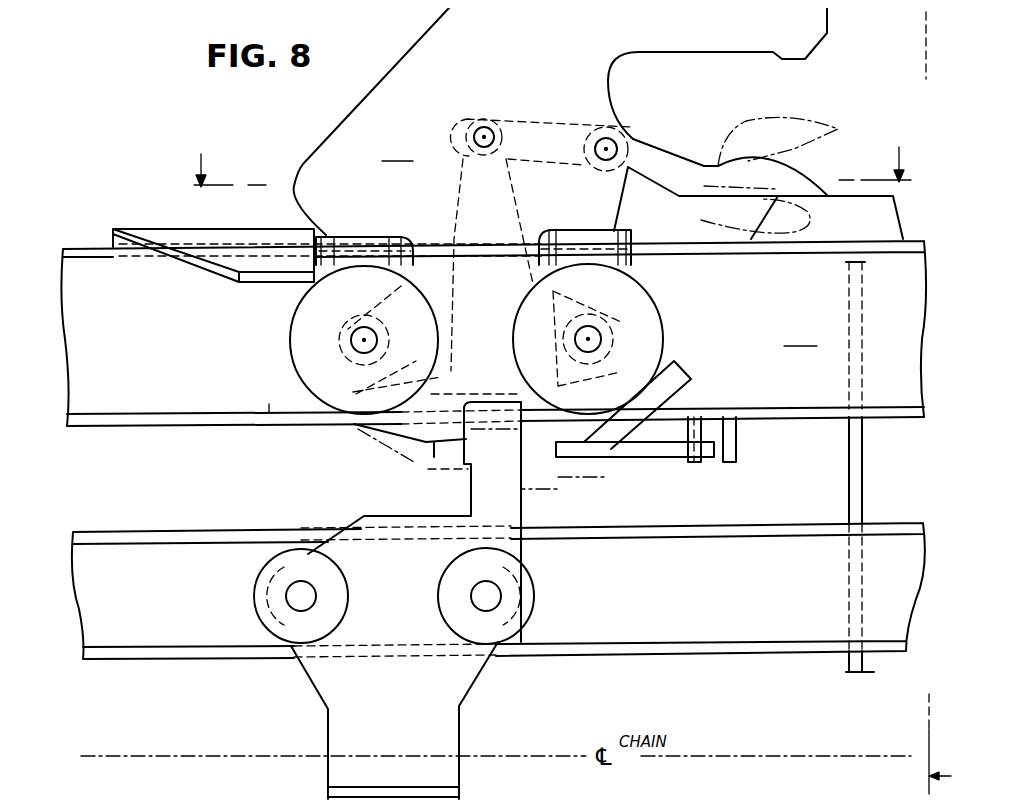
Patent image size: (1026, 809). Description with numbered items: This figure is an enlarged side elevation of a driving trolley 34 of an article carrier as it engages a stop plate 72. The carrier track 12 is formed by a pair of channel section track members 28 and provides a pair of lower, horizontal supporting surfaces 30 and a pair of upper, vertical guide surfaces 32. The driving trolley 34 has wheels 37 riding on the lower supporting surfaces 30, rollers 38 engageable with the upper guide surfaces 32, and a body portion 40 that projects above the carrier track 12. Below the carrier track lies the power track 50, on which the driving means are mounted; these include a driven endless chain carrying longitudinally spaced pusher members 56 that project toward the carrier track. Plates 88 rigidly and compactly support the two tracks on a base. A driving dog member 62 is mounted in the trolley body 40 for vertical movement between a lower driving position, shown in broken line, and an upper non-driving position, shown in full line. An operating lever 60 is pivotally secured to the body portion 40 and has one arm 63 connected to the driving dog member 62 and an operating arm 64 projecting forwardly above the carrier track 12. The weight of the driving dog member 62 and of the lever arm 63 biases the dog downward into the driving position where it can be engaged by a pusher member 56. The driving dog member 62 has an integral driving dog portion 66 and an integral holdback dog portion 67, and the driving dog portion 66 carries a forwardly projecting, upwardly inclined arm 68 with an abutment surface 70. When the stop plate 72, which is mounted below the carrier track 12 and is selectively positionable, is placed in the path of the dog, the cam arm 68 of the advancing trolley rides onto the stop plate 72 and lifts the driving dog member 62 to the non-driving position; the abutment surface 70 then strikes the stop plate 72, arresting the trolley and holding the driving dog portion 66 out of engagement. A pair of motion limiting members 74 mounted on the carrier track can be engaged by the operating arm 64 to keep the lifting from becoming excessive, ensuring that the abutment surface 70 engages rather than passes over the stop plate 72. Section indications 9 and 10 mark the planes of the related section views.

The section line 9- 9 is at (556, 167).
The section line 10- 10 is at (942, 408).
The carrier track 12 is at (88, 240).
The channel section track members 28 is at (800, 335).
The lower supporting surfaces 30 is at (268, 413).
The upper guide surfaces 32 is at (100, 255).
The driving trolley 34 is at (350, 103).
The wheels 37 is at (290, 335).
The rollers 38 is at (628, 238).
The body portion 40 is at (397, 150).
The power track 50 is at (625, 660).
The pusher members 56 is at (468, 497).
The operating lever 60 is at (660, 145).
The driving dog member 62 is at (455, 218).
The lever arm 63 is at (530, 118).
The operating arm 64 is at (732, 140).
The driving dog portion 66 is at (537, 452).
The holdback dog portion 67 is at (427, 445).
The arm (cam) 68 is at (688, 403).
The abutment surface 70 is at (575, 458).
The stop plate 72 is at (775, 493).
The motion limiting members 74 is at (872, 197).
The plates 88 is at (865, 468).